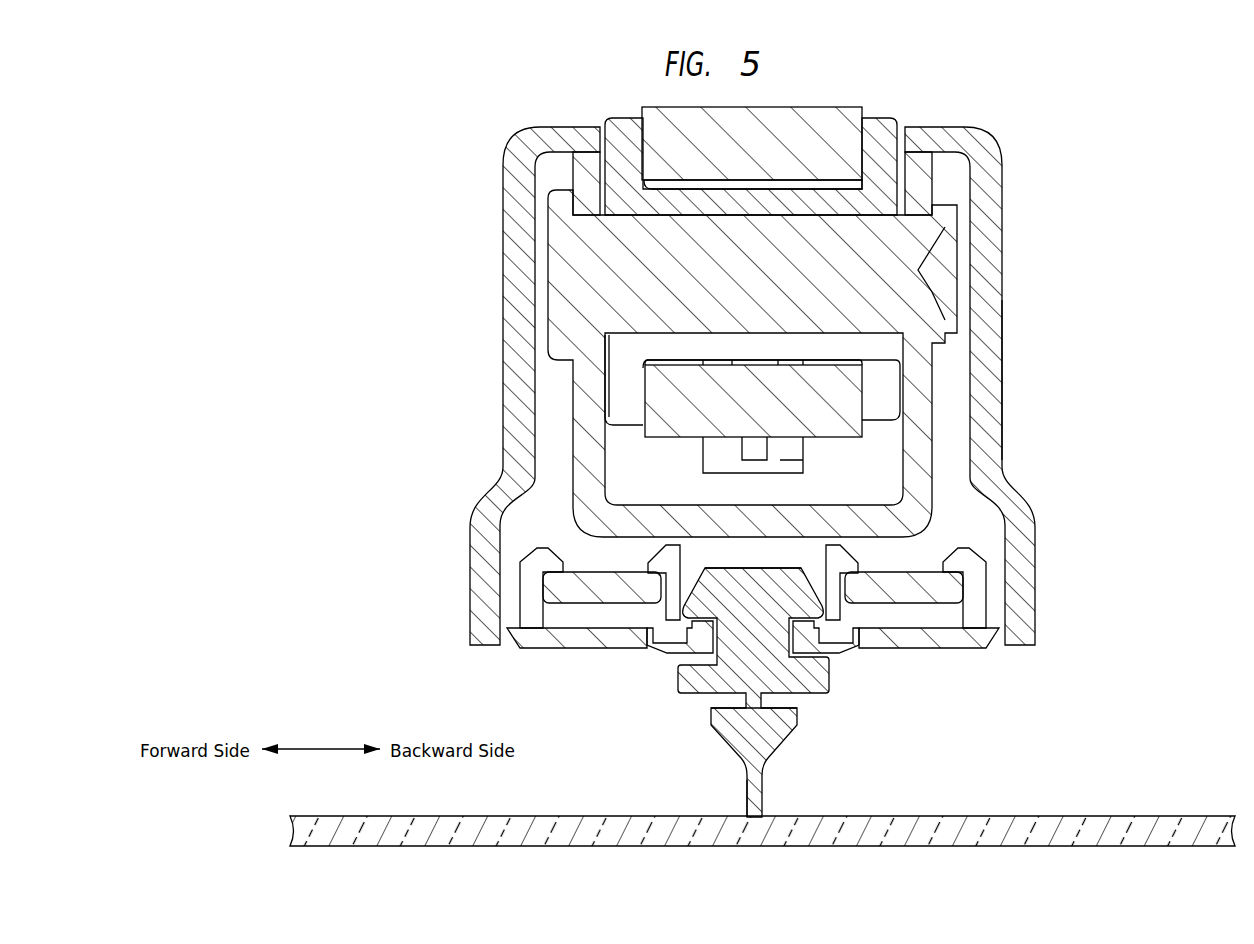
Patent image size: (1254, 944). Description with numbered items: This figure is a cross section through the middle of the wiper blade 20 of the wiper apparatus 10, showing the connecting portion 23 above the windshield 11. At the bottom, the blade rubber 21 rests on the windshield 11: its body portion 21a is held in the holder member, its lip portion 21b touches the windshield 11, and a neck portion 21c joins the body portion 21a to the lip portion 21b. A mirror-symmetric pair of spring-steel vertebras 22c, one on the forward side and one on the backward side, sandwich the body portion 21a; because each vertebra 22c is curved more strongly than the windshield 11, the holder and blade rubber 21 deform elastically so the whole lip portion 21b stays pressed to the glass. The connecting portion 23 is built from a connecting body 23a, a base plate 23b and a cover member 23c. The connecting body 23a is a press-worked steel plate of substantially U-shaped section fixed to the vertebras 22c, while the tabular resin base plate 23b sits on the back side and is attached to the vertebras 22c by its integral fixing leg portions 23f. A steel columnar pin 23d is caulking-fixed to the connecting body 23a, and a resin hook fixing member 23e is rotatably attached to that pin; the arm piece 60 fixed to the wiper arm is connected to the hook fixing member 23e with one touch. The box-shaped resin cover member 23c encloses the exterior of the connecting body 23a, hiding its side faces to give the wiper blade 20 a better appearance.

The wiper apparatus 10 is at (1110, 300).
The windshield 11 is at (312, 832).
The wiper blade 20 is at (386, 328).
The blade rubber 21 is at (790, 750).
The body portion 21a is at (742, 590).
The lip portion 21b is at (752, 760).
The neck portion 21c is at (742, 688).
The vertebra 22c is at (600, 585).
The connecting portion 23 is at (497, 190).
The connecting body 23a is at (590, 485).
The base plate 23b is at (920, 637).
The cover member 23c is at (990, 400).
The columnar pin 23d is at (852, 277).
The hook fixing member 23e is at (652, 203).
The fixing leg portion 23f is at (533, 590).
The arm piece 60 is at (712, 400).